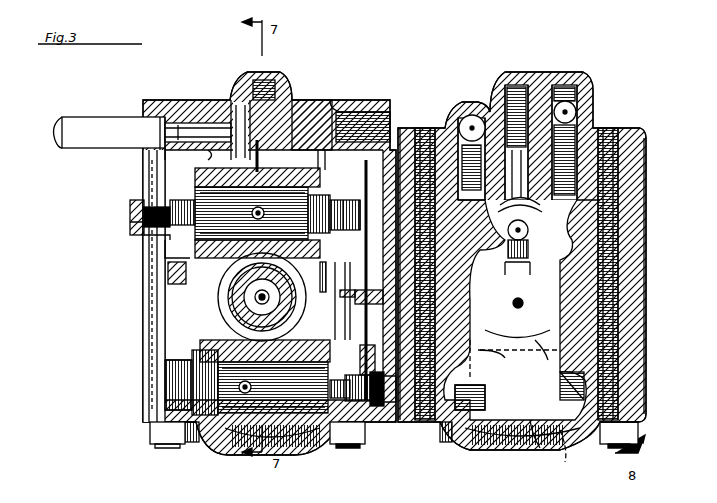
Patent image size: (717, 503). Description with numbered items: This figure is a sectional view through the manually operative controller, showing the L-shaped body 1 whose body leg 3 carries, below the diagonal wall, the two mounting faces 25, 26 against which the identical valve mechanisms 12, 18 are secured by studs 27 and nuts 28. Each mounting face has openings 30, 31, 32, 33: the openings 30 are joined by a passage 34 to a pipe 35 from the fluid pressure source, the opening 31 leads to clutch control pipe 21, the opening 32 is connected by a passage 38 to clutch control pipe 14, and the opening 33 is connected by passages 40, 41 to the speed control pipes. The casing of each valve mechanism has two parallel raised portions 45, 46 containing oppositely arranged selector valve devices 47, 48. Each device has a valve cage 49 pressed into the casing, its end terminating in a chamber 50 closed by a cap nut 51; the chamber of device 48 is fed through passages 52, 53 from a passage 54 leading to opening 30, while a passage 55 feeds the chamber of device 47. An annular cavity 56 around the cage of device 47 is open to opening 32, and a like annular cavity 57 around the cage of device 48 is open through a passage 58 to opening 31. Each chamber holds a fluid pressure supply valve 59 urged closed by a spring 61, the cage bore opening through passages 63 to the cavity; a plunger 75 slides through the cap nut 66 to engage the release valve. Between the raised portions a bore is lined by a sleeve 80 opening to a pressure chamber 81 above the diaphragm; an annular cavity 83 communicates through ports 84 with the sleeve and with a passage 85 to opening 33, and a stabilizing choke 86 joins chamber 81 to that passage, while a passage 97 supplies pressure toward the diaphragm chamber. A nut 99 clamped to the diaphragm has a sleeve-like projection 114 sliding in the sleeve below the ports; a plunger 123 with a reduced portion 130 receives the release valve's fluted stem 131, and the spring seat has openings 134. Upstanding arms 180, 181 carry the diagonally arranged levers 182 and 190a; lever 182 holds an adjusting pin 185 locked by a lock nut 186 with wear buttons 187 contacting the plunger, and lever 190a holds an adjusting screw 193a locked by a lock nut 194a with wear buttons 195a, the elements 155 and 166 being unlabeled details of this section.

The body 1 is at (187, 100).
The body leg 3 is at (372, 100).
The valve mechanism 12 is at (143, 318).
The clutch control pipe 14 is at (60, 126).
The valve mechanism 18 is at (620, 375).
The clutch control pipe 21 is at (472, 118).
The mounting face 25 is at (290, 110).
The mounting face 26 is at (628, 152).
The stud 27 is at (165, 446).
The nut 28 is at (150, 436).
The opening 30 is at (596, 135).
The opening 31 is at (460, 122).
The opening 32 is at (269, 156).
The opening 33 is at (535, 140).
The passage 34 is at (328, 112).
The pipe 35 is at (570, 112).
The passage 38 is at (178, 102).
The passage 40 is at (268, 82).
The passage 41 is at (328, 301).
The raised portion 45 is at (190, 273).
The raised portion 46 is at (215, 425).
The selector valve device 47 is at (170, 158).
The selector valve device 48 is at (200, 362).
The valve cage 49 is at (232, 445).
The chamber 50 is at (108, 356).
The cap nut 51 is at (108, 376).
The passage 52 is at (208, 425).
The passage 53 is at (531, 447).
The passage 54 is at (585, 380).
The passage 55 is at (314, 160).
The annular cavity 56 is at (240, 102).
The annular cavity 57 is at (290, 448).
The passage 58 is at (512, 420).
The fluid pressure supply valve 59 is at (266, 212).
The spring 61 is at (268, 216).
The passage 63 is at (275, 397).
The cap nut 66 is at (260, 388).
The plunger 75 is at (168, 208).
The sleeve 80 is at (232, 318).
The pressure chamber 81 is at (530, 245).
The annular cavity 83 is at (555, 345).
The port 84 is at (535, 355).
The passage 85 is at (625, 185).
The stabilizing choke 86 is at (528, 230).
The passage 97 is at (569, 461).
The nut 99 is at (540, 268).
The sleeve-like projection 114 is at (548, 326).
The plunger 123 is at (245, 297).
The reduced portion 130 is at (497, 360).
The fluted stem 131 is at (535, 308).
The opening 134 is at (350, 303).
The block 155 is at (336, 312).
The bracket 166 is at (175, 249).
The arm 180 is at (148, 285).
The arm 181 is at (362, 280).
The lever 182 is at (165, 182).
The adjusting pin 185 is at (130, 225).
The lock nut 186 is at (130, 205).
The wear button 187 is at (155, 238).
The lever 190a is at (392, 420).
The adjusting screw 193a is at (370, 412).
The lock nut 194a is at (380, 410).
The wear button 195a is at (362, 370).